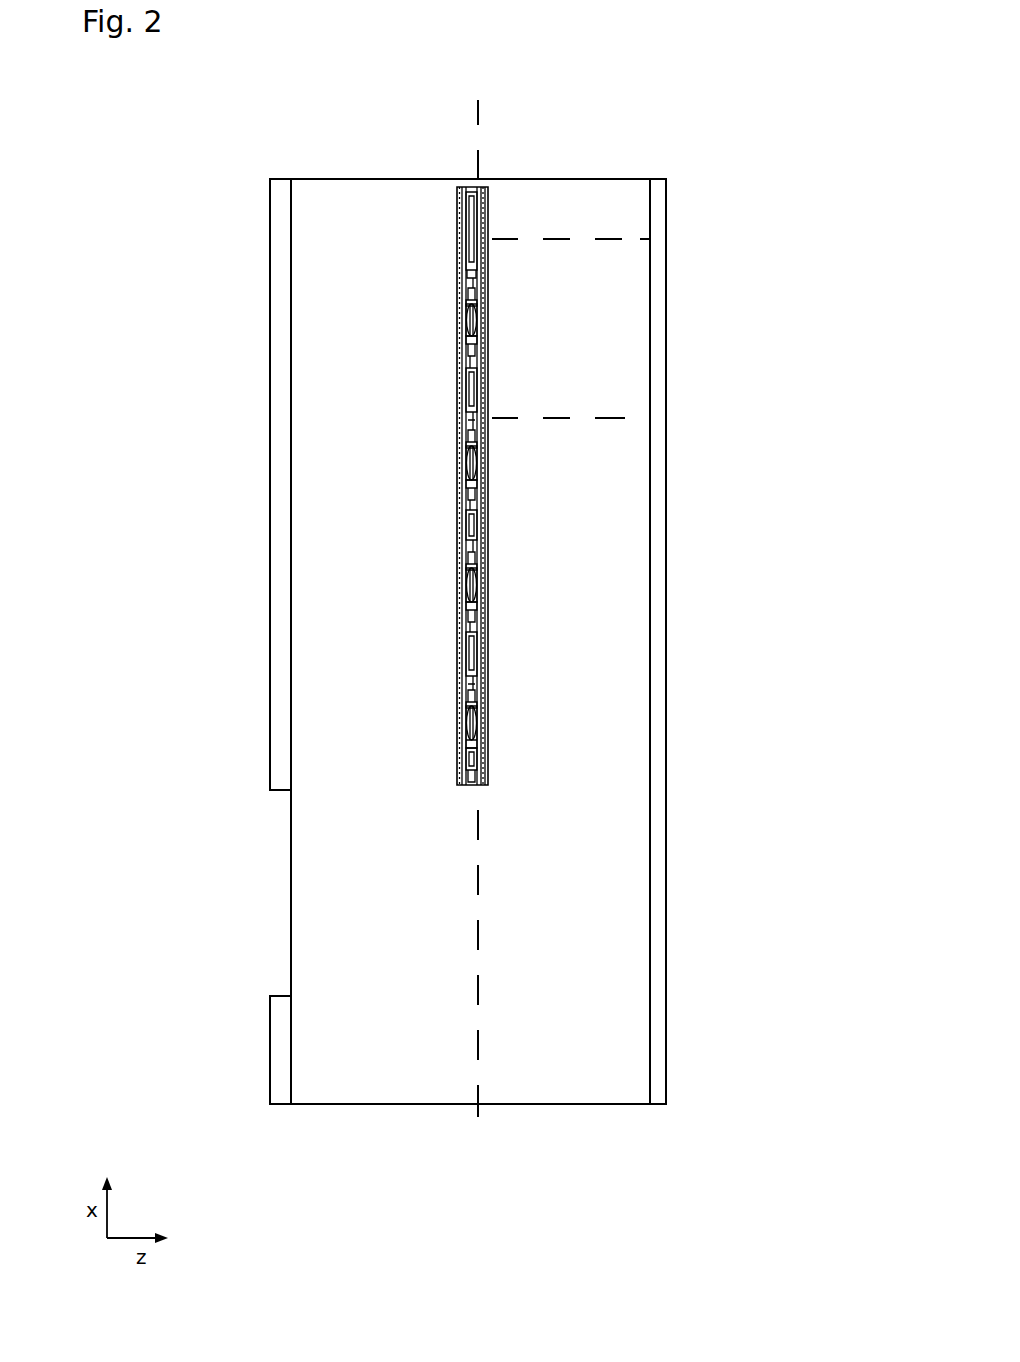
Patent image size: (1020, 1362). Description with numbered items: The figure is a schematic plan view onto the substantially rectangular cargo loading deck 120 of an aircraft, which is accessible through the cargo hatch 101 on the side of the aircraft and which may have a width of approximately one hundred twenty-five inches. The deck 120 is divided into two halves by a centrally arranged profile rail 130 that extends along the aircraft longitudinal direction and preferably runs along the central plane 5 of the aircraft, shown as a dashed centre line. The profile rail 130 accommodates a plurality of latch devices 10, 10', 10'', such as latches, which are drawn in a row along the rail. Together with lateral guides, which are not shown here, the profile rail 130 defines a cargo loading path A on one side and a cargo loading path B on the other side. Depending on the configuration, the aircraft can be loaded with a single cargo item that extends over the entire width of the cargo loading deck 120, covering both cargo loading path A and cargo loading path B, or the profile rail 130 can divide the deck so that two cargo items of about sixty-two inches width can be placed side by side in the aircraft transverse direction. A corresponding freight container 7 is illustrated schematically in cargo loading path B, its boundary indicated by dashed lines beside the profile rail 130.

The cargo hatch 101 is at (258, 890).
The cargo loading deck 120 is at (342, 515).
The profile rail 130 is at (471, 225).
The latch device 10 is at (607, 319).
The latch device 10' is at (612, 478).
The latch device 10'' is at (615, 599).
The freight container 7 is at (567, 230).
The central plane 5 is at (477, 1150).
The cargo loading path A is at (360, 151).
The cargo loading path B is at (560, 150).